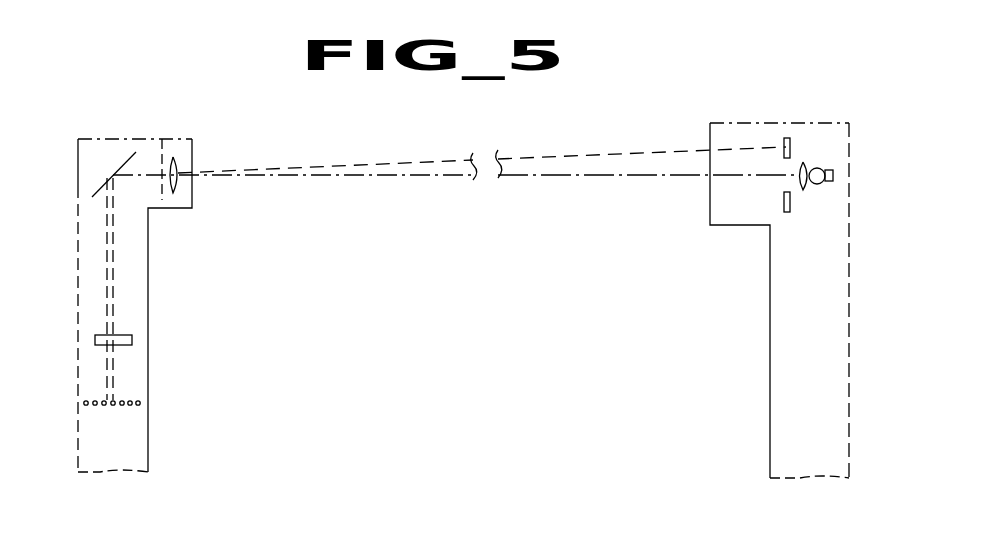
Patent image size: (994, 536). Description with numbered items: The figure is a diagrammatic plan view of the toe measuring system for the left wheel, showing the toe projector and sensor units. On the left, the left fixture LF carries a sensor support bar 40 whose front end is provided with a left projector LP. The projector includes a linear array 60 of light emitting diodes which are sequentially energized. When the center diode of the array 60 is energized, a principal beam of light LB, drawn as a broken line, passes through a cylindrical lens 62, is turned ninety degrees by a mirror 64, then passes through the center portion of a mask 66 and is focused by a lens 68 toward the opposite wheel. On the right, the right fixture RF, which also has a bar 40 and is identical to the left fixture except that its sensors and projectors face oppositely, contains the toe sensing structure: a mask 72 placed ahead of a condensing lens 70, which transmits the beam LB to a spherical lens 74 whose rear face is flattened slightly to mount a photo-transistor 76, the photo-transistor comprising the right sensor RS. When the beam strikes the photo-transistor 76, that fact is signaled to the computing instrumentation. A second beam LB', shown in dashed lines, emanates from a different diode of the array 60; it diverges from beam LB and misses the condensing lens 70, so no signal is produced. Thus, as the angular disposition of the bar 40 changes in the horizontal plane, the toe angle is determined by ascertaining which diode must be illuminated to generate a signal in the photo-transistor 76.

The sensor support bar 40 is at (150, 449).
The linear array of light emitting diodes 60 is at (150, 401).
The cylindrical lens 62 is at (132, 340).
The mirror 64 is at (96, 194).
The mask 66 is at (167, 163).
The lens 68 is at (178, 165).
The condensing lens 70 is at (805, 160).
The mask 72 is at (795, 193).
The spherical lens 74 is at (820, 167).
The photo-transistor 76 is at (827, 168).
The left beam LB is at (453, 275).
The light beam LB' is at (482, 145).
The left projector LP is at (150, 278).
The left fixture LF is at (166, 367).
The right fixture RF is at (758, 348).
The right sensor RS is at (833, 179).